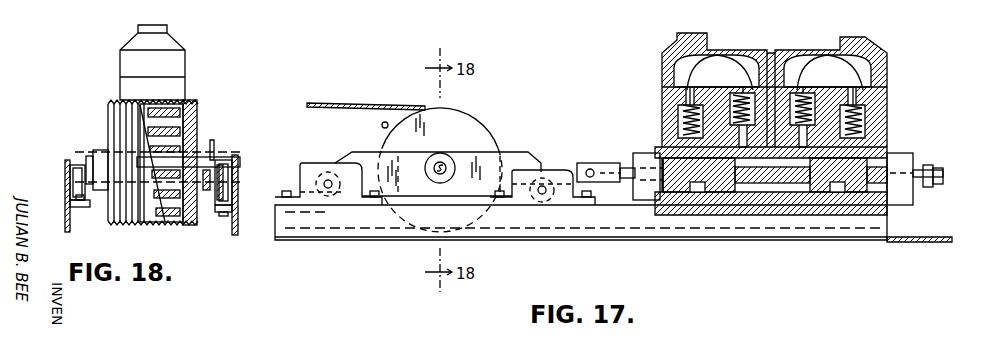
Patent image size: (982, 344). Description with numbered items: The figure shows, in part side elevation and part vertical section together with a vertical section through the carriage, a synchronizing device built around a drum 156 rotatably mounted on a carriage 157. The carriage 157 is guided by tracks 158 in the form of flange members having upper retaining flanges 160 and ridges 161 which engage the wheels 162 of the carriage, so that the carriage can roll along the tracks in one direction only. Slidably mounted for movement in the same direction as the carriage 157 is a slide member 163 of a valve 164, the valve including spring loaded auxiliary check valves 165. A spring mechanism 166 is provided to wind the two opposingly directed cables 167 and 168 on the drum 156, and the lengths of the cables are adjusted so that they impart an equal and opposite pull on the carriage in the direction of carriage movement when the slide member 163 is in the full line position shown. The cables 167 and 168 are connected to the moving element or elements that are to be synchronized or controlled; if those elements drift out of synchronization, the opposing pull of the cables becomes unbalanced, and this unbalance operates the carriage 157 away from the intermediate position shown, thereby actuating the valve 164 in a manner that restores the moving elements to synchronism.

In FIG. 17, the drum 156 is at (478, 137).
In FIG. 17, the carriage 157 is at (398, 187).
In FIG. 18, the tracks 158 is at (57, 182).
In FIG. 17, the tracks 158 is at (566, 168).
In FIG. 18, the upper retaining flanges 160 is at (71, 163).
In FIG. 18, the ridges 161 is at (238, 188).
In FIG. 18, the wheels 162 is at (240, 172).
In FIG. 17, the wheels 162 is at (561, 198).
In FIG. 17, the slide member 163 is at (722, 183).
In FIG. 17, the valve 164 is at (888, 100).
In FIG. 17, the spring loaded auxiliary check valves 165 is at (805, 120).
In FIG. 18, the spring mechanism 166 is at (197, 120).
In FIG. 17, the cable 167 is at (355, 97).
In FIG. 17, the cable 168 is at (916, 243).